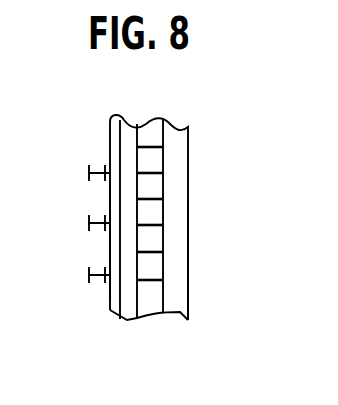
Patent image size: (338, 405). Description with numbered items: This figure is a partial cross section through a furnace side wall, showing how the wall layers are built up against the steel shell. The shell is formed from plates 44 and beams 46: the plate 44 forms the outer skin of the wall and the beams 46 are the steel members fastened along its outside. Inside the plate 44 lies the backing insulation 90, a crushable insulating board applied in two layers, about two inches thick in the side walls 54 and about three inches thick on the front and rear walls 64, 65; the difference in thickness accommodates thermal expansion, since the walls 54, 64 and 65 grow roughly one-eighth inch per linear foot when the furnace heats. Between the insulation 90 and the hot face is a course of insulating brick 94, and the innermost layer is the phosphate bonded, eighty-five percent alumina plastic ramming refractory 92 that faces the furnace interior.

The side wall 54 is at (204, 190).
The front wall 64 is at (204, 190).
The rear wall 65 is at (179, 108).
The insulation 90 is at (117, 119).
The plastic ramming refractory 92 is at (180, 207).
The insulating brick 94 is at (155, 287).
The beam 46 is at (87, 167).
The plate 44 is at (110, 194).